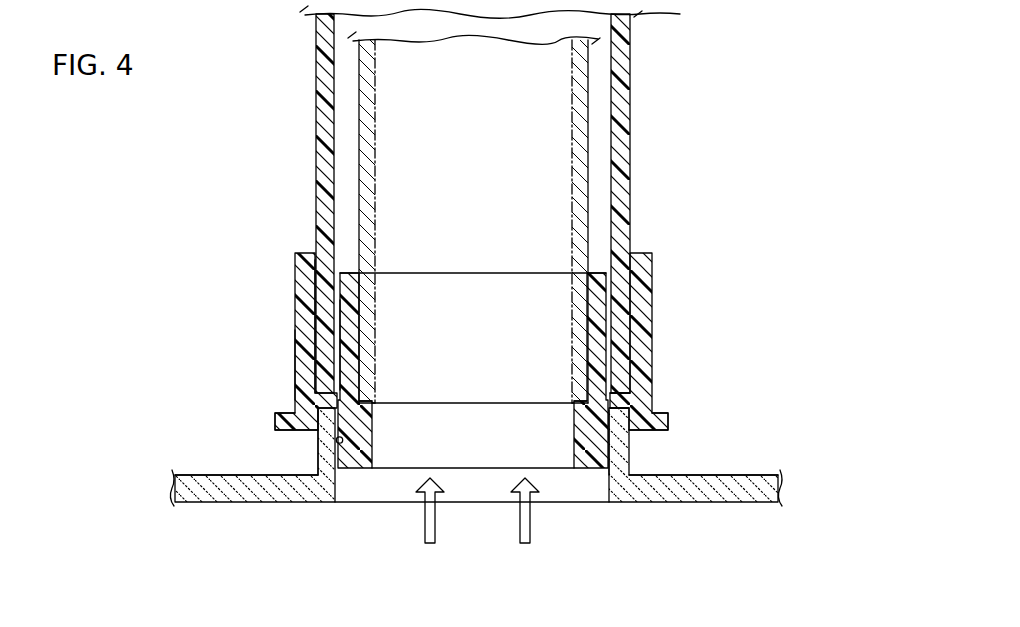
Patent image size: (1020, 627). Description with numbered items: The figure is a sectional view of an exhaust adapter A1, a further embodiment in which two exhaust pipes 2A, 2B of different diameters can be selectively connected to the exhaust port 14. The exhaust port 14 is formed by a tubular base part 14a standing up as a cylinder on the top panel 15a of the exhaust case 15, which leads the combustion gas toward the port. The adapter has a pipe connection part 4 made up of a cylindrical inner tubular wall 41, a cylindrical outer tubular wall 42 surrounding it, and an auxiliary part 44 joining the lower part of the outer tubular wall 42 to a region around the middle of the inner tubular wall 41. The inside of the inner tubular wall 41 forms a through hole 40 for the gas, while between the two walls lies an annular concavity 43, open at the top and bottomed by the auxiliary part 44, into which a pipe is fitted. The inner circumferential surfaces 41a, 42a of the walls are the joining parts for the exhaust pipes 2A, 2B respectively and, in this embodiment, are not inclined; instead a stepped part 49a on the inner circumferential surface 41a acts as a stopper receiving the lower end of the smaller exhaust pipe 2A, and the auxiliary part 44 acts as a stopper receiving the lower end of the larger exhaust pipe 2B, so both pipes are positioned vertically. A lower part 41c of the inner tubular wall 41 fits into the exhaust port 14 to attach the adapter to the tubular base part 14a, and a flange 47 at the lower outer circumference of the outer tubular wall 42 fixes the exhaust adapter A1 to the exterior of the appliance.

The exhaust pipe 2B is at (323, 51).
The exhaust pipe 2A is at (367, 172).
The pipe connection part 4 is at (474, 382).
The outer tubular wall 42 is at (280, 323).
The inner circumferential surface 42a is at (318, 312).
The annular concavity 43 is at (297, 355).
The inner tubular wall 41 is at (465, 402).
The inner circumferential surface 41a is at (360, 333).
The stepped part 49a is at (362, 402).
The lower part of the inner tubular wall 41c is at (350, 457).
The through hole 40 is at (469, 303).
The exhaust adapter A1 is at (499, 329).
The auxiliary part 44 is at (616, 403).
The flange 47 is at (666, 422).
The exhaust case 15 is at (470, 457).
The top panel 15a is at (235, 476).
The tubular base part 14a is at (621, 457).
The exhaust port 14 is at (473, 487).